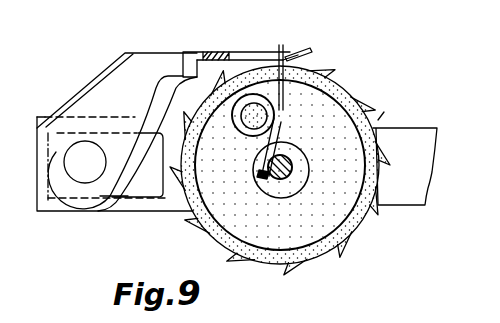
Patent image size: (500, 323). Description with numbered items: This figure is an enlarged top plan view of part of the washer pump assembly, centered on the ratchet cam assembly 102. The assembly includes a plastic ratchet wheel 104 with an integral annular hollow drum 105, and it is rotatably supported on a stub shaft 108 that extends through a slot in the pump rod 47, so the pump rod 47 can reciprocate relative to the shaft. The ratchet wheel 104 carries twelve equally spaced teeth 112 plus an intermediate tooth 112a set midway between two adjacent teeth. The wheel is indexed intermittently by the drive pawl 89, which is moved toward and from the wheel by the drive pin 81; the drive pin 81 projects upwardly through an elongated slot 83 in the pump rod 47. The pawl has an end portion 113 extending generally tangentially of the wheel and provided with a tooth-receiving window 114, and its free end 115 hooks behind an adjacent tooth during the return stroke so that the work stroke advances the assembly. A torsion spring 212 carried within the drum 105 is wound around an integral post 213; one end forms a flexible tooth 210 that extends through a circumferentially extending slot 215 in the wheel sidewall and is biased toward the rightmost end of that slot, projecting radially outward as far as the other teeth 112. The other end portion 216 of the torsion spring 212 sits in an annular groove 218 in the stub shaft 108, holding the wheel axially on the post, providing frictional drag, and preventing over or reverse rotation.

The drive pawl 89 is at (77, 89).
The drive pin 81 is at (77, 158).
The elongated slot 83 is at (131, 197).
The end portion 113 is at (222, 52).
The tooth-receiving window 114 is at (280, 50).
The free end 115 is at (310, 53).
The flexible tooth 210 is at (281, 54).
The circumferentially extending slot 215 is at (256, 96).
The annular hollow drum 105 is at (300, 255).
The teeth 112 is at (338, 251).
The ratchet wheel 104 is at (336, 73).
The intermediate tooth 112a is at (352, 90).
The ratchet cam assembly 102 is at (382, 108).
The stub shaft 108 is at (278, 180).
The annular groove 218 is at (291, 167).
The torsion spring 212 is at (238, 110).
The integral post 213 is at (254, 118).
The other end portion 216 is at (282, 122).
The pump rod 47 is at (418, 187).